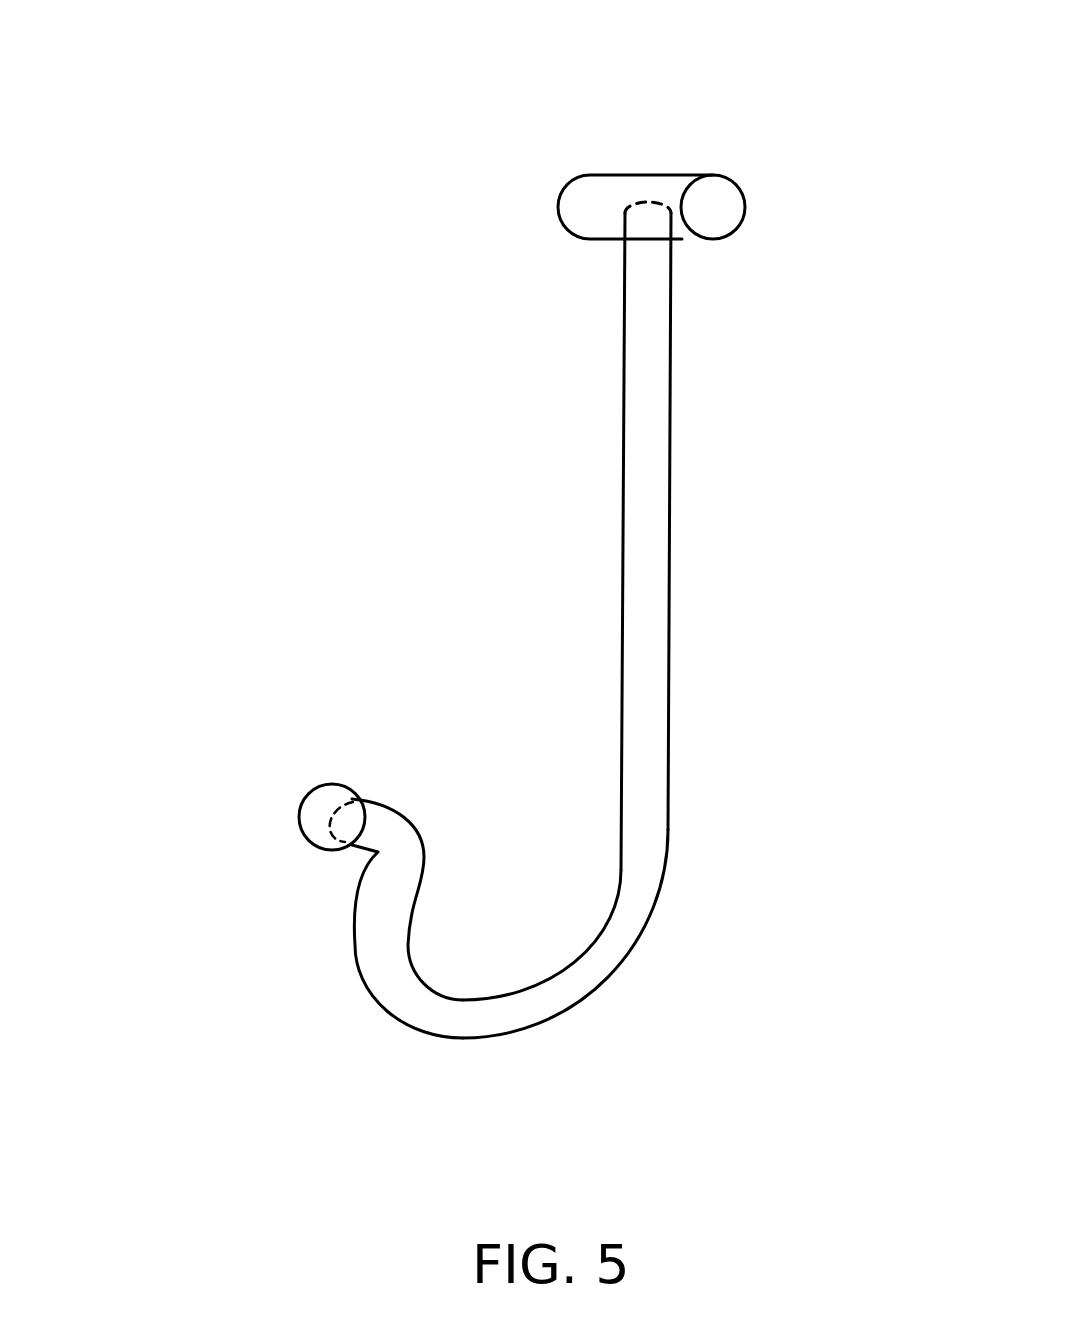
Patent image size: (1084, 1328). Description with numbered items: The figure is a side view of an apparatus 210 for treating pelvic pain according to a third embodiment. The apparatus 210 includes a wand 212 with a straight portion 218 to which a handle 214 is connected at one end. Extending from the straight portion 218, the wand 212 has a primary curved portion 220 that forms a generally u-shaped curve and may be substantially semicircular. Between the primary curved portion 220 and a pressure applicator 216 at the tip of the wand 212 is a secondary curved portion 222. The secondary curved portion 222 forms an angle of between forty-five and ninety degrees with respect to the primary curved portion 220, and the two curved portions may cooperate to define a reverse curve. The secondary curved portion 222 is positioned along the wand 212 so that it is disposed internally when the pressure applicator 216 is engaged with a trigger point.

The apparatus 210 is at (477, 145).
The wand 212 is at (622, 555).
The handle 214 is at (722, 225).
The pressure applicator 216 is at (300, 818).
The straight portion 218 is at (672, 300).
The primary curved portion 220 is at (583, 1003).
The secondary curved portion 222 is at (375, 853).